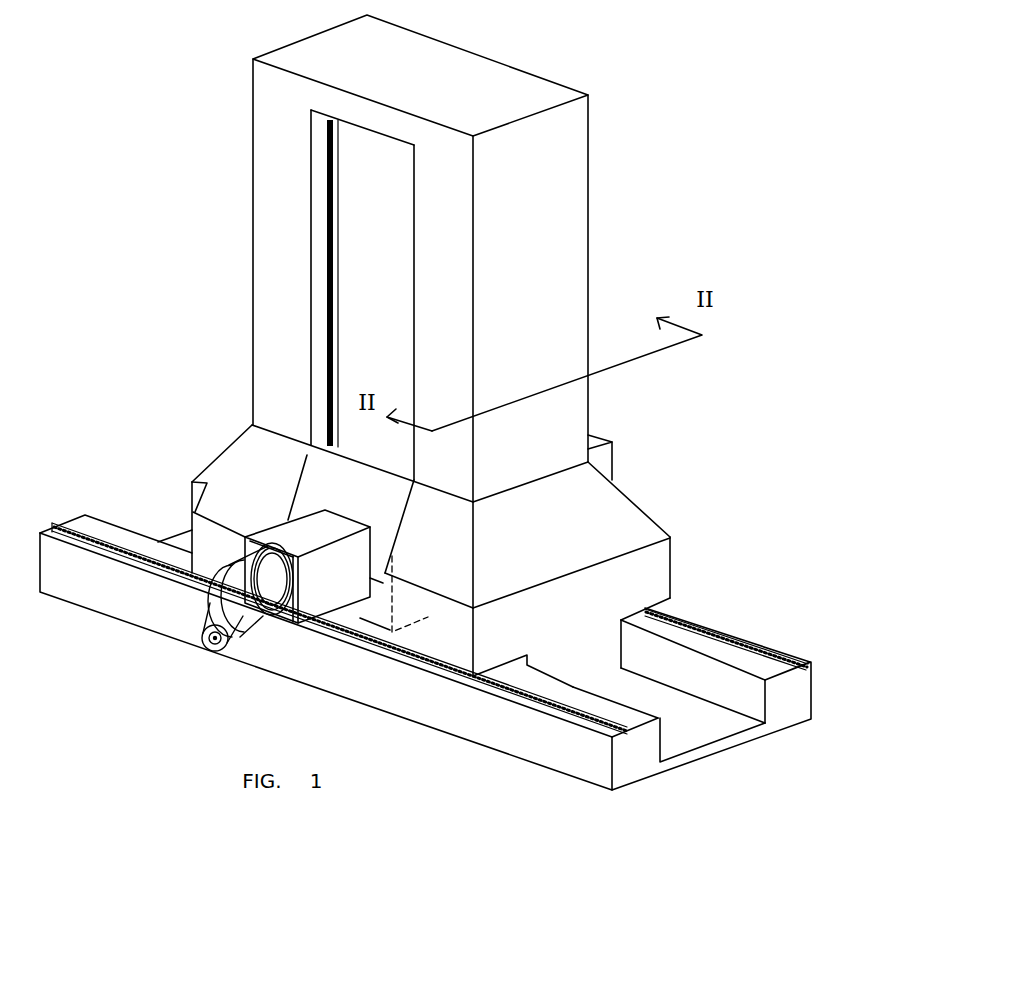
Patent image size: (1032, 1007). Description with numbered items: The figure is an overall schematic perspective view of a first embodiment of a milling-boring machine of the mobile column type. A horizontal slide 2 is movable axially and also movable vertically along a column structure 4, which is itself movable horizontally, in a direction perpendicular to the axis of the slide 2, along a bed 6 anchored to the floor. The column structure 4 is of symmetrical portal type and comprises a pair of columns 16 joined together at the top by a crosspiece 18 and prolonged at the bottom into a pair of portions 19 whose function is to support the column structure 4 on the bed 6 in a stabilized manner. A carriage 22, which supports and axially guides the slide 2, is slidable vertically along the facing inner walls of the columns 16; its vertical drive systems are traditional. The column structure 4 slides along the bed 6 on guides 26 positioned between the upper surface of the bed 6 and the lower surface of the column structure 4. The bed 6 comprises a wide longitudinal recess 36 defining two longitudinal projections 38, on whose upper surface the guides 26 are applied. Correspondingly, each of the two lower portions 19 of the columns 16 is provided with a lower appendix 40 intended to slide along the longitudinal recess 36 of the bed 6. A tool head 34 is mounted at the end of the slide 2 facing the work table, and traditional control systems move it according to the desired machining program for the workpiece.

The horizontal slide 2 is at (340, 577).
The column structure 4 is at (590, 245).
The bed 6 is at (815, 677).
The columns 16 is at (277, 229).
The crosspiece 18 is at (379, 118).
The lower portions 19 is at (605, 522).
The carriage 22 is at (338, 493).
The guides 26 is at (783, 648).
The tool head 34 is at (265, 572).
The longitudinal recess 36 is at (697, 728).
The longitudinal projections 38 is at (793, 698).
The lower appendix 40 is at (595, 643).